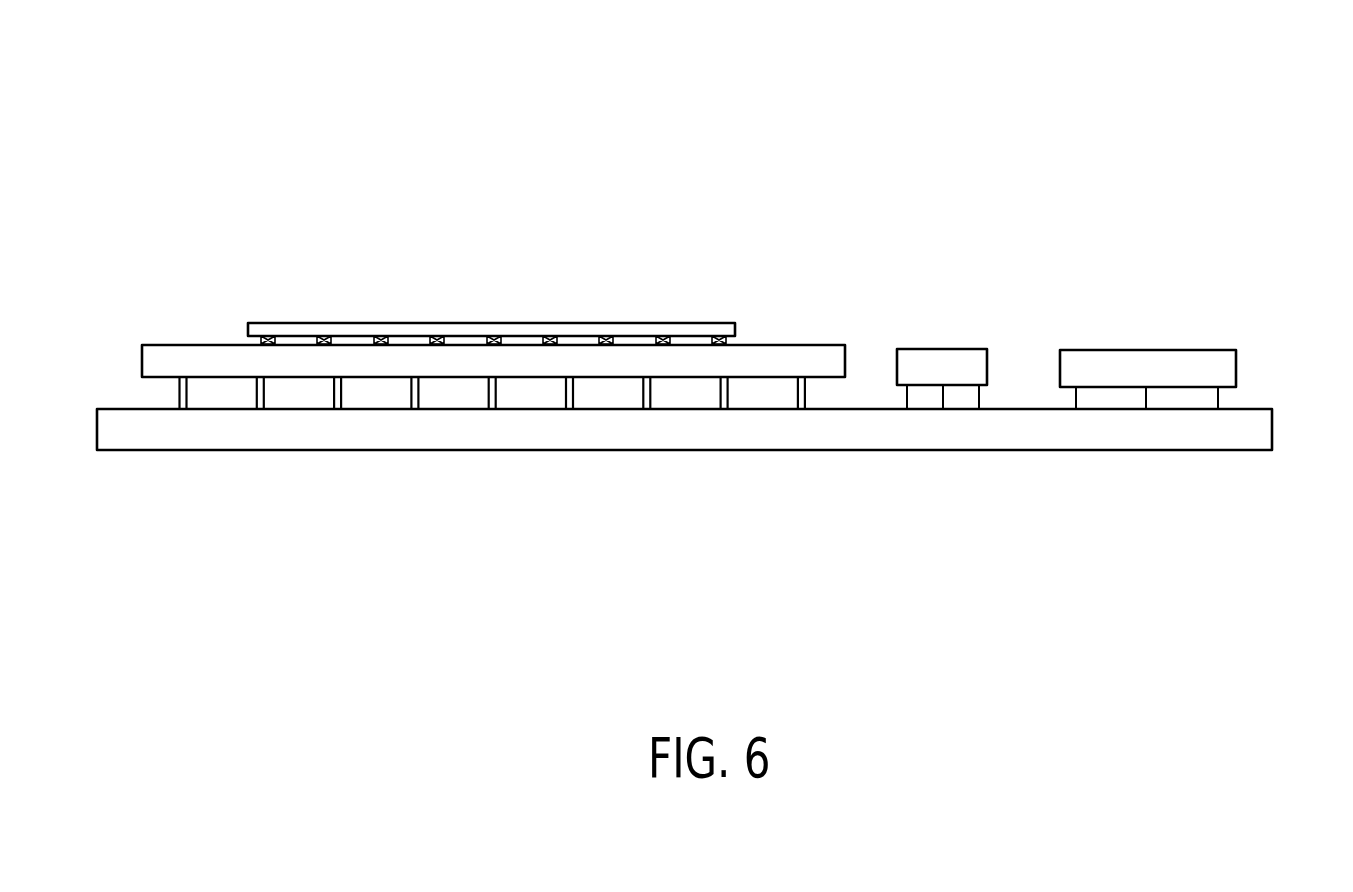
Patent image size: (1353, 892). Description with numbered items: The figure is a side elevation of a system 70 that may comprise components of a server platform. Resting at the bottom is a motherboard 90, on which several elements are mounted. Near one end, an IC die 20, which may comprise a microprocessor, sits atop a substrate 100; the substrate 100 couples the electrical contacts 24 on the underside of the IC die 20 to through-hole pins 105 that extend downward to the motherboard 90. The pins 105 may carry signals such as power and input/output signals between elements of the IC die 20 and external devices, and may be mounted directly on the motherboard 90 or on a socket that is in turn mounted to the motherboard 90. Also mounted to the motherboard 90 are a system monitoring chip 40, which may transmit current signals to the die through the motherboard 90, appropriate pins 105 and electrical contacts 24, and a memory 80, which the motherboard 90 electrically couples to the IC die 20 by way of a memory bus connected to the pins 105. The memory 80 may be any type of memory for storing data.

The IC die 20 is at (660, 324).
The electrical contacts 24 is at (240, 341).
The system monitoring chip 40 is at (956, 349).
The system 70 is at (1001, 148).
The memory 80 is at (1205, 350).
The motherboard 90 is at (1256, 410).
The substrate 100 is at (782, 346).
The through-hole pins 105 is at (157, 399).